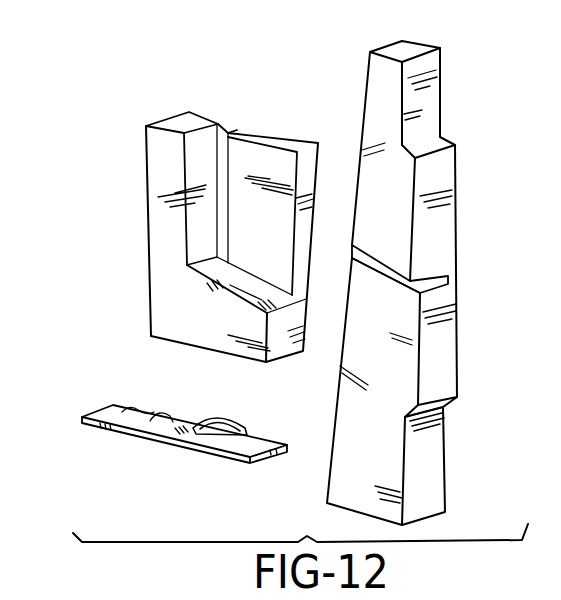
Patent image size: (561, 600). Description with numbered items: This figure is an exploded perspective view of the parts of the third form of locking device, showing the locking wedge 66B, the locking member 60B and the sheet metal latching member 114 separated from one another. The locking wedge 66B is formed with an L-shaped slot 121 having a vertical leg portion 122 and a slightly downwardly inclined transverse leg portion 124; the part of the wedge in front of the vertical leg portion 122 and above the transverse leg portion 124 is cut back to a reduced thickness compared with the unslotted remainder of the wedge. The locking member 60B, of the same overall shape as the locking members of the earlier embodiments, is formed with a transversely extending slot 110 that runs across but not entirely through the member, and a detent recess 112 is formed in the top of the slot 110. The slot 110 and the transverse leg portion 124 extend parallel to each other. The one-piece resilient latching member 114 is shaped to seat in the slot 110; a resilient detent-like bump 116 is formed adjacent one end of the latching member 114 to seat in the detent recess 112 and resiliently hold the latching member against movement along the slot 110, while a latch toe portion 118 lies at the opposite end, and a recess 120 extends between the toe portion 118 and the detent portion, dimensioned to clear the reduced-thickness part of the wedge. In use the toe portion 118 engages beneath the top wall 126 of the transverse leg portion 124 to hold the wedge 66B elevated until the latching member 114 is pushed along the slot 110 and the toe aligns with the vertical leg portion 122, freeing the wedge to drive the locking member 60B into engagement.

The locking wedge 66B is at (160, 171).
The L-shaped slot 121 is at (198, 226).
The vertical leg portion 122 is at (228, 130).
The transverse leg portion 124 is at (303, 298).
The top wall 126 is at (244, 288).
The locking member 60B is at (407, 351).
The detent recess 112 is at (381, 258).
The slot 110 is at (382, 283).
The latching member 114 is at (204, 450).
The detent-like bump 116 is at (237, 422).
The latch toe portion 118 is at (133, 401).
The recess 120 is at (157, 415).